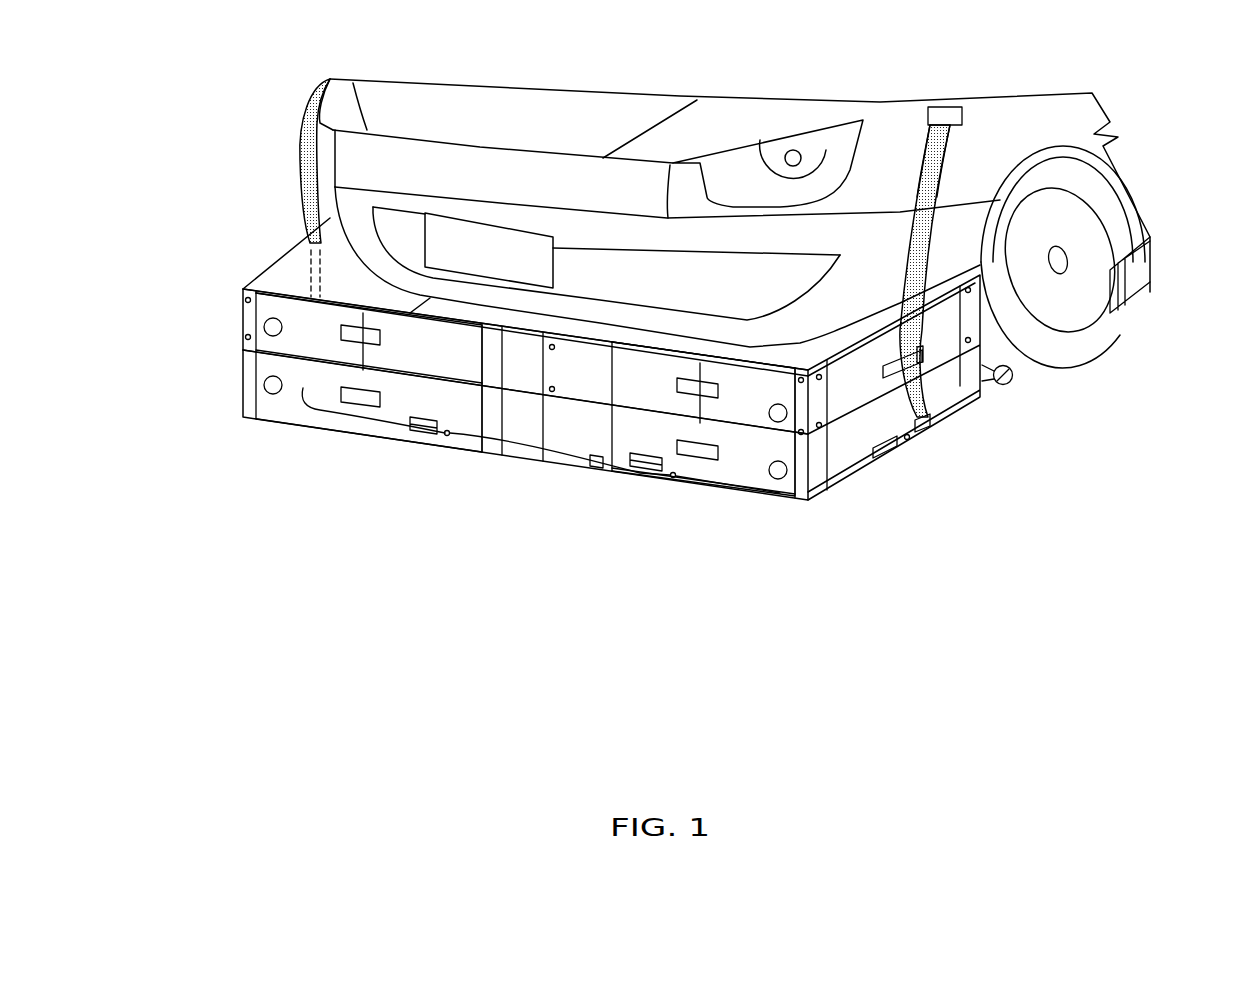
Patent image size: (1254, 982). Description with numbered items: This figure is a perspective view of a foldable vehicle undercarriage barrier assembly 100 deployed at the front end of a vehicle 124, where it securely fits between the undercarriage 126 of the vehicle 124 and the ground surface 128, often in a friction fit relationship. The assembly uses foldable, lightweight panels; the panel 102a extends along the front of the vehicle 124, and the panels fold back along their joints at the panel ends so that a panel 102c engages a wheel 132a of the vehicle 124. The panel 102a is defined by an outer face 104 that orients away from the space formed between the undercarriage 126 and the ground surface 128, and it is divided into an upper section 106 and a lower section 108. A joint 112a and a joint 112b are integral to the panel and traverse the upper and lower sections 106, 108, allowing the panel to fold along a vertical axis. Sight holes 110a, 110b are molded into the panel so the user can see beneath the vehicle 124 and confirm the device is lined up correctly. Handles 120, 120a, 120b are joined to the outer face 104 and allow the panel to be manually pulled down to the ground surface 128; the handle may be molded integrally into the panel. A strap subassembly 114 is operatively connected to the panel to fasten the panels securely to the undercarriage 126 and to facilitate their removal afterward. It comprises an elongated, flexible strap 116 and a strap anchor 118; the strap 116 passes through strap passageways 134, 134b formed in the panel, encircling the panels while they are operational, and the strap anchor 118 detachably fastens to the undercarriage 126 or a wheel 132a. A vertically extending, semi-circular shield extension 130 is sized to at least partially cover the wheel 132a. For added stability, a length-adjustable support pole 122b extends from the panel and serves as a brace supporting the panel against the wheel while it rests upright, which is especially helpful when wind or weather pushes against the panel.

The foldable vehicle undercarriage barrier assembly 100 is at (212, 229).
The panel 102a is at (302, 388).
The panel 102c is at (1142, 278).
The outer face 104 is at (465, 360).
The upper section 106 is at (240, 290).
The lower section 108 is at (240, 417).
The sight hole 110a is at (272, 390).
The sight hole 110b is at (780, 473).
The joint 112a is at (244, 388).
The joint 112b is at (808, 401).
The strap subassembly 114 is at (940, 232).
The strap 116 is at (947, 157).
The strap anchor 118 is at (950, 107).
The handle 120 is at (597, 467).
The handle 120a is at (372, 341).
The handle 120b is at (705, 453).
The support pole 122b is at (1006, 385).
The vehicle 124 is at (350, 157).
The undercarriage 126 is at (838, 333).
The ground surface 128 is at (532, 493).
The shield extension 130 is at (1091, 268).
The wheel 132a is at (1113, 187).
The strap passageway 134 is at (427, 437).
The strap passageway 134b is at (651, 470).